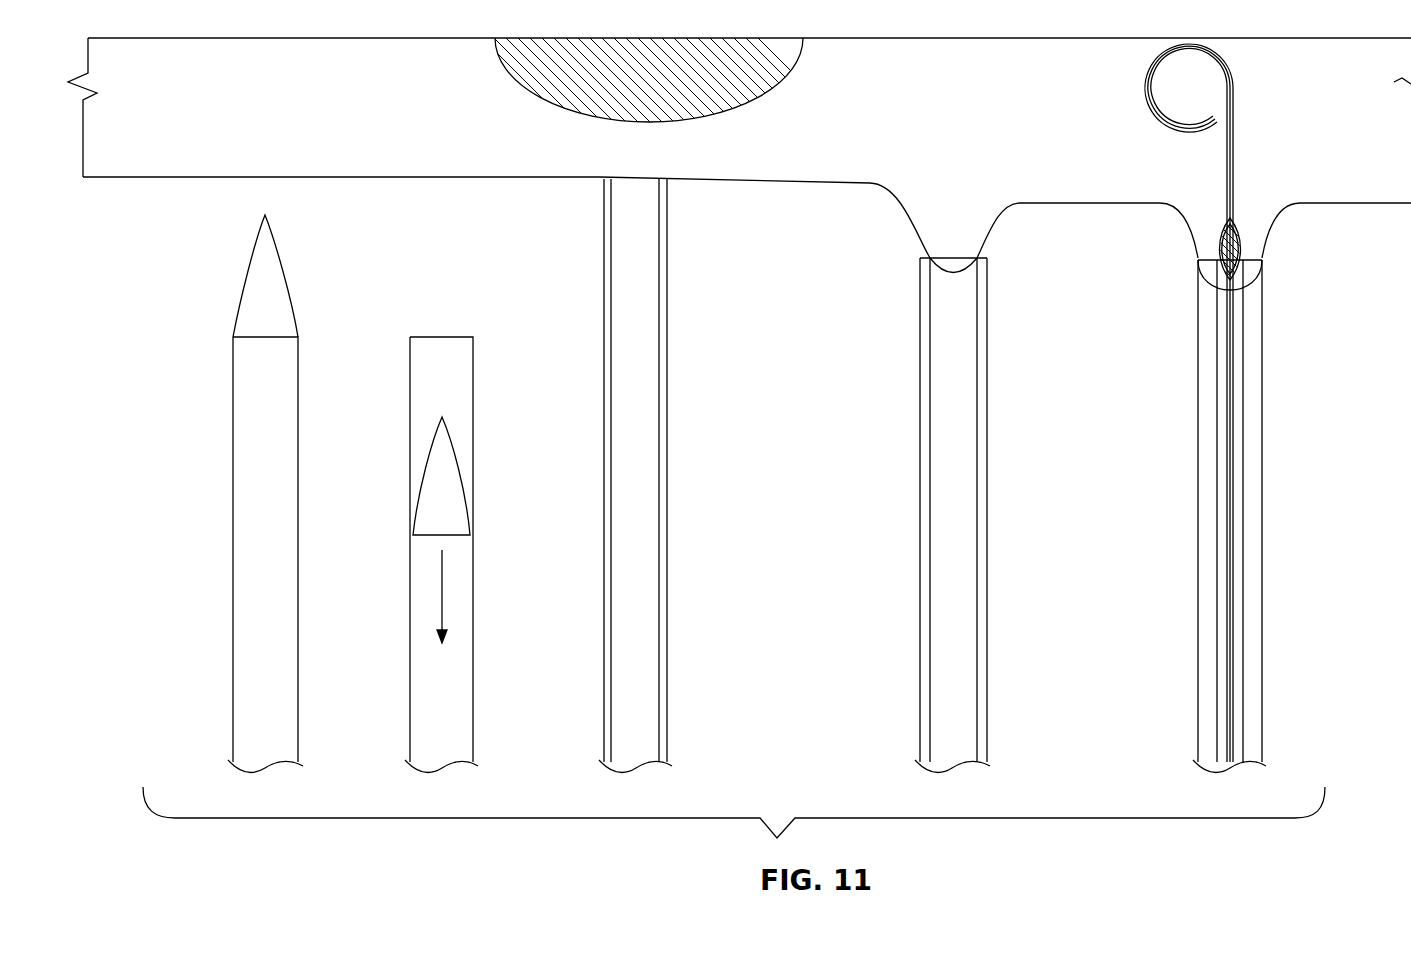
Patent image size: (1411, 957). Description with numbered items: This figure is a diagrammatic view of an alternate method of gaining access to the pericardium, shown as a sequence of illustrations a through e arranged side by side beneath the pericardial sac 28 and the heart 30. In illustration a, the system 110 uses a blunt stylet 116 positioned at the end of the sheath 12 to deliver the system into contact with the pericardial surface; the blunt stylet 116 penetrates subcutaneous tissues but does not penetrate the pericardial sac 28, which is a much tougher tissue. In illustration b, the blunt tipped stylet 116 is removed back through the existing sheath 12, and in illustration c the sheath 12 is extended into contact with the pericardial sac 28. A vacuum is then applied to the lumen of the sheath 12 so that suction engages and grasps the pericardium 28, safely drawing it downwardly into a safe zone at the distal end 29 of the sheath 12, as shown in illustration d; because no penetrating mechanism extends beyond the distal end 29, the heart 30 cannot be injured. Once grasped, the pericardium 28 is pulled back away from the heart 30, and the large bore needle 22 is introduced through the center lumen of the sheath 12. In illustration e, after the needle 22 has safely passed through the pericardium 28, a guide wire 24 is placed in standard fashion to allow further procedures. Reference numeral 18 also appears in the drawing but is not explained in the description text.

The sheath 12 is at (278, 445).
The stylet 116 is at (270, 265).
The system 110 is at (212, 567).
The pericardial sac 28 is at (162, 177).
The heart 30 is at (530, 80).
The distal end 29 is at (985, 258).
The tube 18 is at (965, 503).
The large bore needle 22 is at (1248, 246).
The guide wire 24 is at (1234, 97).